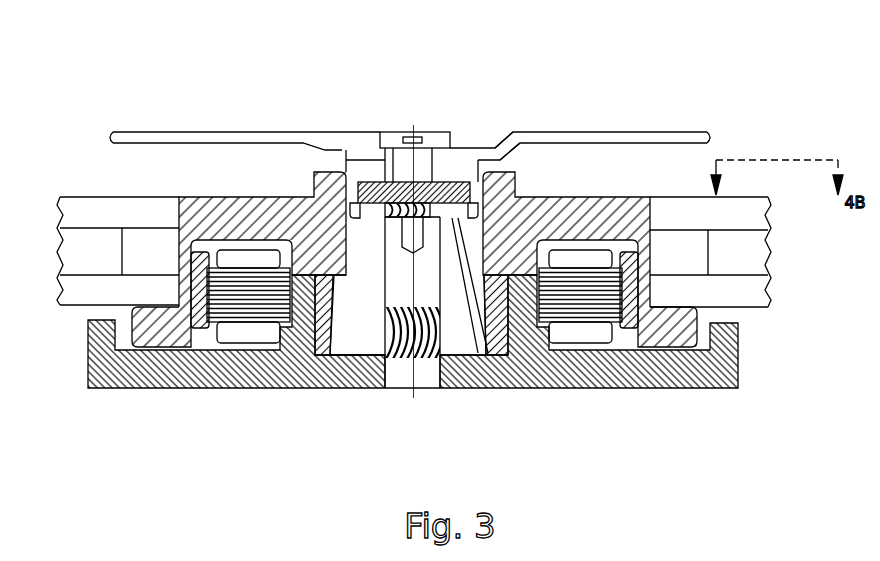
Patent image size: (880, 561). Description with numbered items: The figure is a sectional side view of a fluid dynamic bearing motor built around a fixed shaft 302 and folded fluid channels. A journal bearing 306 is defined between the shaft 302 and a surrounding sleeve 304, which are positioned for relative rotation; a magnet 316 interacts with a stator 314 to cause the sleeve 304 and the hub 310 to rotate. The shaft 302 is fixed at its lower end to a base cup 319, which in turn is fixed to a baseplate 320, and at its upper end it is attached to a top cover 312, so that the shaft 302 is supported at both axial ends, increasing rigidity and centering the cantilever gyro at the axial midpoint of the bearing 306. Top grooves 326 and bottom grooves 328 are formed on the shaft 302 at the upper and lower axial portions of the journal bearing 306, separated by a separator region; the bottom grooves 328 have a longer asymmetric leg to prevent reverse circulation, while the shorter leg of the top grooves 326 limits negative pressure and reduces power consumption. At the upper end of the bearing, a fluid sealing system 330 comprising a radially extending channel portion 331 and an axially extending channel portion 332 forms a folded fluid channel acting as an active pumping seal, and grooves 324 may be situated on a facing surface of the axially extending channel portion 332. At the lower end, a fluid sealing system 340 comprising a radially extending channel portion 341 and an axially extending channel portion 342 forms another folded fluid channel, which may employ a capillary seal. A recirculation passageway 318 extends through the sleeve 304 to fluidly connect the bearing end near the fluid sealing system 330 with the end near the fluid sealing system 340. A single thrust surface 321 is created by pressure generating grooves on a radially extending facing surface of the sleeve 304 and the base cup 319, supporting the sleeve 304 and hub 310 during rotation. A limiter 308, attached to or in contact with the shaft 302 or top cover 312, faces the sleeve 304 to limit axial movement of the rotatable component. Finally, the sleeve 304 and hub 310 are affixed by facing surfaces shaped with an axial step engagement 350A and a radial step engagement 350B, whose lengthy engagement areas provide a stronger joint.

The shaft 302 is at (426, 288).
The sleeve 304 is at (344, 302).
The journal bearing 306 is at (382, 260).
The limiter 308 is at (382, 132).
The hub 310 is at (594, 274).
The top cover 312 is at (345, 158).
The stator 314 is at (614, 362).
The magnet 316 is at (676, 378).
The recirculation passageway 318 is at (506, 386).
The base cup 319 is at (483, 385).
The baseplate 320 is at (573, 388).
The thrust surface 321 is at (462, 378).
The grooves 324 is at (370, 170).
The top grooves 326 is at (380, 180).
The bottom grooves 328 is at (428, 352).
The fluid sealing system 330 is at (452, 172).
The radially extending channel portion 331 is at (470, 158).
The axially extending channel portion 332 is at (520, 197).
The fluid sealing system 340 is at (356, 390).
The radially extending channel portion 341 is at (337, 358).
The axially extending channel portion 342 is at (328, 330).
The axial step engagement 350A is at (537, 257).
The radial step engagement 350B is at (483, 262).